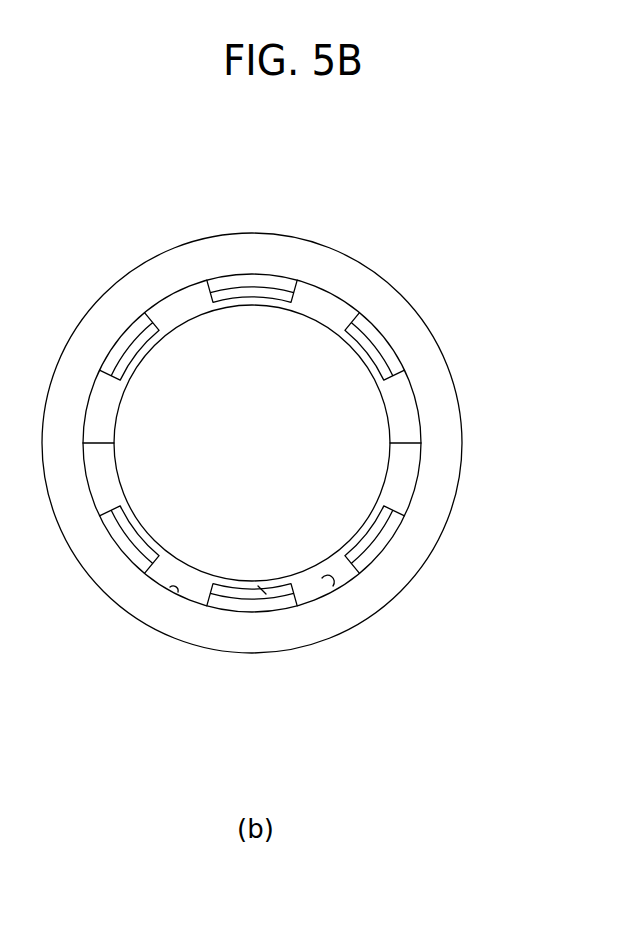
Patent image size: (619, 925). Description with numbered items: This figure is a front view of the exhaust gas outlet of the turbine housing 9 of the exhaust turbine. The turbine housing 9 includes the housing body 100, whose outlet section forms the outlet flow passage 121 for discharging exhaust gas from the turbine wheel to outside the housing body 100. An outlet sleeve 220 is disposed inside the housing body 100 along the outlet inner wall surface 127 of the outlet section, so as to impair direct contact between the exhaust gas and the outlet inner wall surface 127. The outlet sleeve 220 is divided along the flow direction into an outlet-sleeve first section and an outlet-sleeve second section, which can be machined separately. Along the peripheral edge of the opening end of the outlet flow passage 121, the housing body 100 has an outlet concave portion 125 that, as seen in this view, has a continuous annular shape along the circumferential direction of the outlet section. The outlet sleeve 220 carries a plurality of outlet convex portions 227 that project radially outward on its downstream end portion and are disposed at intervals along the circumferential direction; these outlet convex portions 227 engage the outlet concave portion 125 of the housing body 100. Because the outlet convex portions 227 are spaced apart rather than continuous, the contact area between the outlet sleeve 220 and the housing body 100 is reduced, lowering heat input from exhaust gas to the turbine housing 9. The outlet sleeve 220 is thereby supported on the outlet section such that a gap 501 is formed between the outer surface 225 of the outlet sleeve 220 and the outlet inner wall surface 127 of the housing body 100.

The turbine housing 9 is at (136, 215).
The housing body 100 is at (347, 282).
The outlet sleeve 220 is at (407, 415).
The outlet flow passage 121 is at (342, 513).
The outlet inner wall surface 127 is at (126, 532).
The outlet concave portion 125 is at (176, 591).
The outer surface 225 is at (239, 592).
The gap 501 is at (263, 590).
The outlet convex portion 227 is at (328, 583).